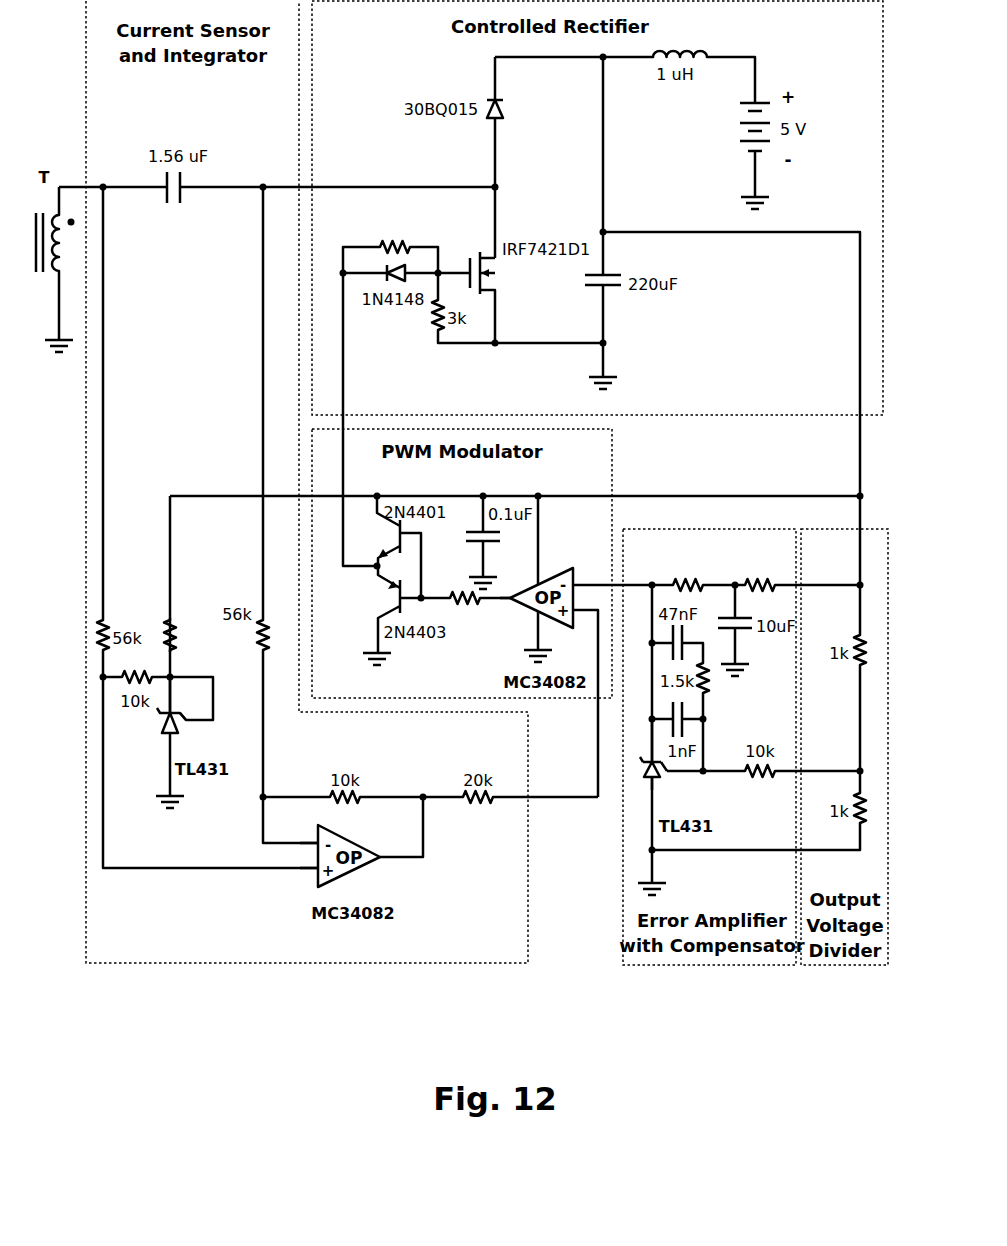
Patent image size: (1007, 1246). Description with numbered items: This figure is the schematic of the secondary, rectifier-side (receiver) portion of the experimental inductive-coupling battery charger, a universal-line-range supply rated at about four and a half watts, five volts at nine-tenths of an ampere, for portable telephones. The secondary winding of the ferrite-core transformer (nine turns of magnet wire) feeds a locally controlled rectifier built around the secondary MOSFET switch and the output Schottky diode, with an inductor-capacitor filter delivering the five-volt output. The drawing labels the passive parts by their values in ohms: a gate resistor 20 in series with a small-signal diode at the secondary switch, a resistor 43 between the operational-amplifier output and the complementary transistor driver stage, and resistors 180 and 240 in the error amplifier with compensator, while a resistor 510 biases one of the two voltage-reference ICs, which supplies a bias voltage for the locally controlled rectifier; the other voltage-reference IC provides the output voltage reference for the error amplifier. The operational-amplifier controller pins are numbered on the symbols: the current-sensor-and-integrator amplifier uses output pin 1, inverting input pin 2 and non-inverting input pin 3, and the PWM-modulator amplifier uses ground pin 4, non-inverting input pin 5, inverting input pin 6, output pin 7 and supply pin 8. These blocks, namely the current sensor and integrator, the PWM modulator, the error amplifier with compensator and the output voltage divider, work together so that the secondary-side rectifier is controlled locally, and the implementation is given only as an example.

The pin 1 is at (403, 767).
The pin 2 is at (403, 792).
The pin 3 is at (427, 805).
The pin 4 is at (537, 636).
The pin 5 is at (585, 703).
The pin 6 is at (612, 574).
The pin 7 is at (504, 588).
The pin 8 is at (530, 540).
The 20 ohm gate resistor 20 is at (390, 249).
The 43 ohm resistor 43 is at (465, 612).
The 180 ohm resistor 180 is at (693, 576).
The 240 ohm resistor 240 is at (797, 576).
The 510 ohm resistor 510 is at (193, 635).